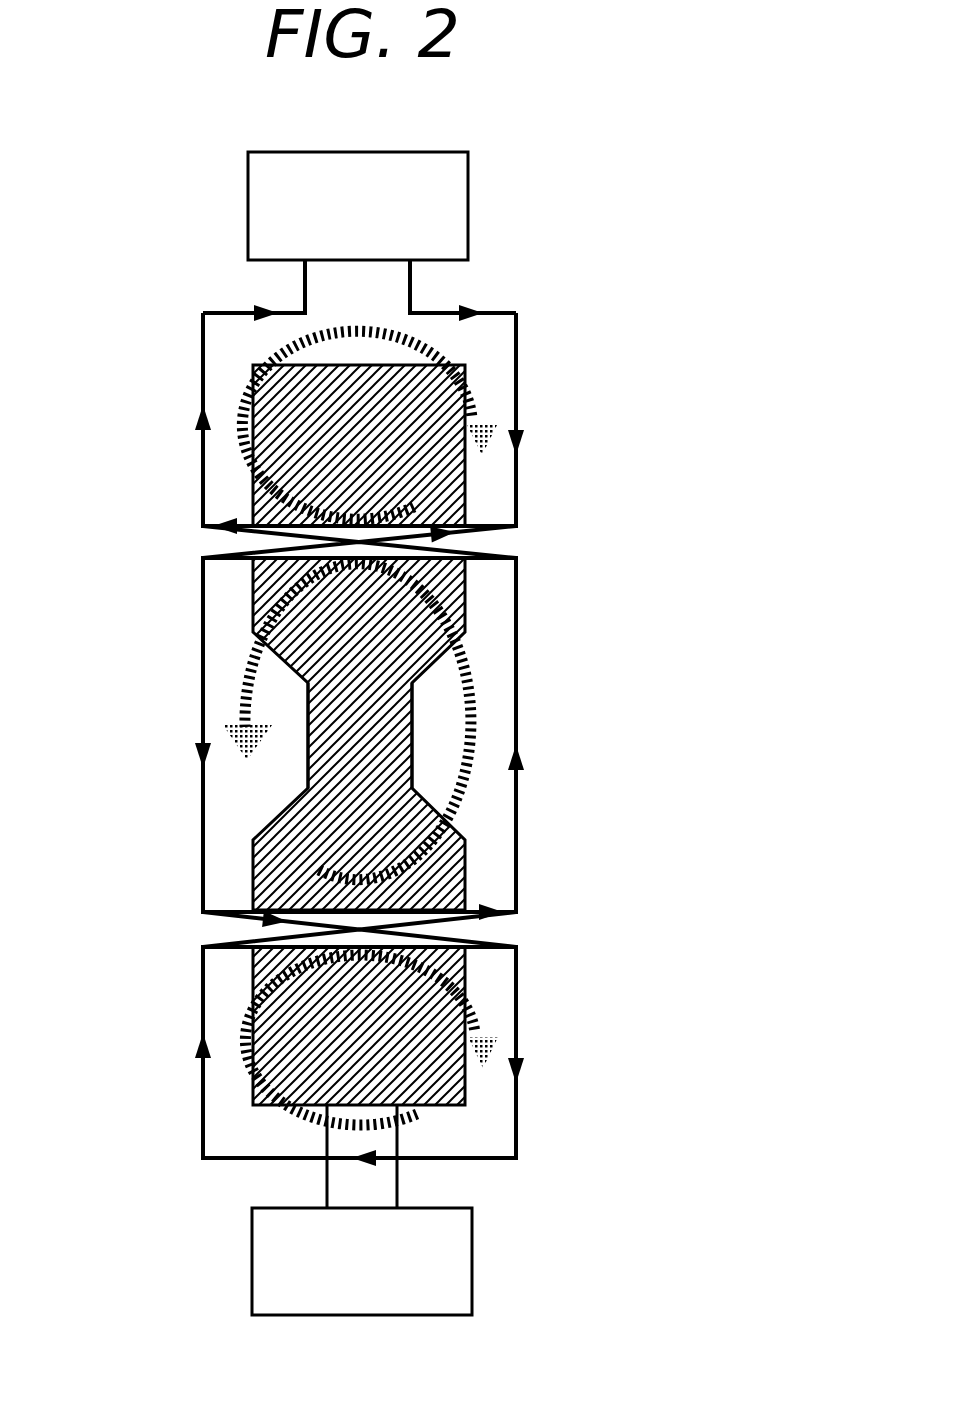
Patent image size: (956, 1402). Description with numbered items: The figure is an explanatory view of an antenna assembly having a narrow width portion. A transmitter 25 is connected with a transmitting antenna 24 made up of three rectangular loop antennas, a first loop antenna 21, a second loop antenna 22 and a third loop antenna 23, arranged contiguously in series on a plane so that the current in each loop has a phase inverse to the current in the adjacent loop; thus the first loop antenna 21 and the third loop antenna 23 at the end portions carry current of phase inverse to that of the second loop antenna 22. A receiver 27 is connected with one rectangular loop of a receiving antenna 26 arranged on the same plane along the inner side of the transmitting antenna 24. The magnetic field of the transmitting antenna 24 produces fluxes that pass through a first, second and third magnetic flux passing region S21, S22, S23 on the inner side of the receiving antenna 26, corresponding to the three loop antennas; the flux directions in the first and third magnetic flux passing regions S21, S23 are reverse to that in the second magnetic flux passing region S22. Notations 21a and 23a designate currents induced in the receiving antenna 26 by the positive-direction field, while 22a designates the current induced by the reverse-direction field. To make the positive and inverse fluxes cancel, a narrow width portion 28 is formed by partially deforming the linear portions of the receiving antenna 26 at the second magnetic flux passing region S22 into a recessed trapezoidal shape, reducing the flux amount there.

The first loop antenna 21 is at (682, 315).
The second loop antenna 22 is at (682, 562).
The third loop antenna 23 is at (682, 935).
The current induced in the receiving antenna by a magnetic field in a positive direc 21a is at (245, 408).
The current induced in the receiving antenna by a magnetic field in a reverse direct 22a is at (250, 673).
The current induced in the receiving antenna by a magnetic field in a positive direc 23a is at (243, 1022).
The first magnetic flux passing region S21 is at (333, 452).
The second magnetic flux passing region S22 is at (347, 742).
The third magnetic flux passing region S23 is at (343, 1050).
The transmitting antenna 24 is at (217, 312).
The transmitter 25 is at (468, 172).
The receiving antenna 26 is at (443, 1105).
The receiver 27 is at (472, 1279).
The narrow width portion 28 is at (307, 717).